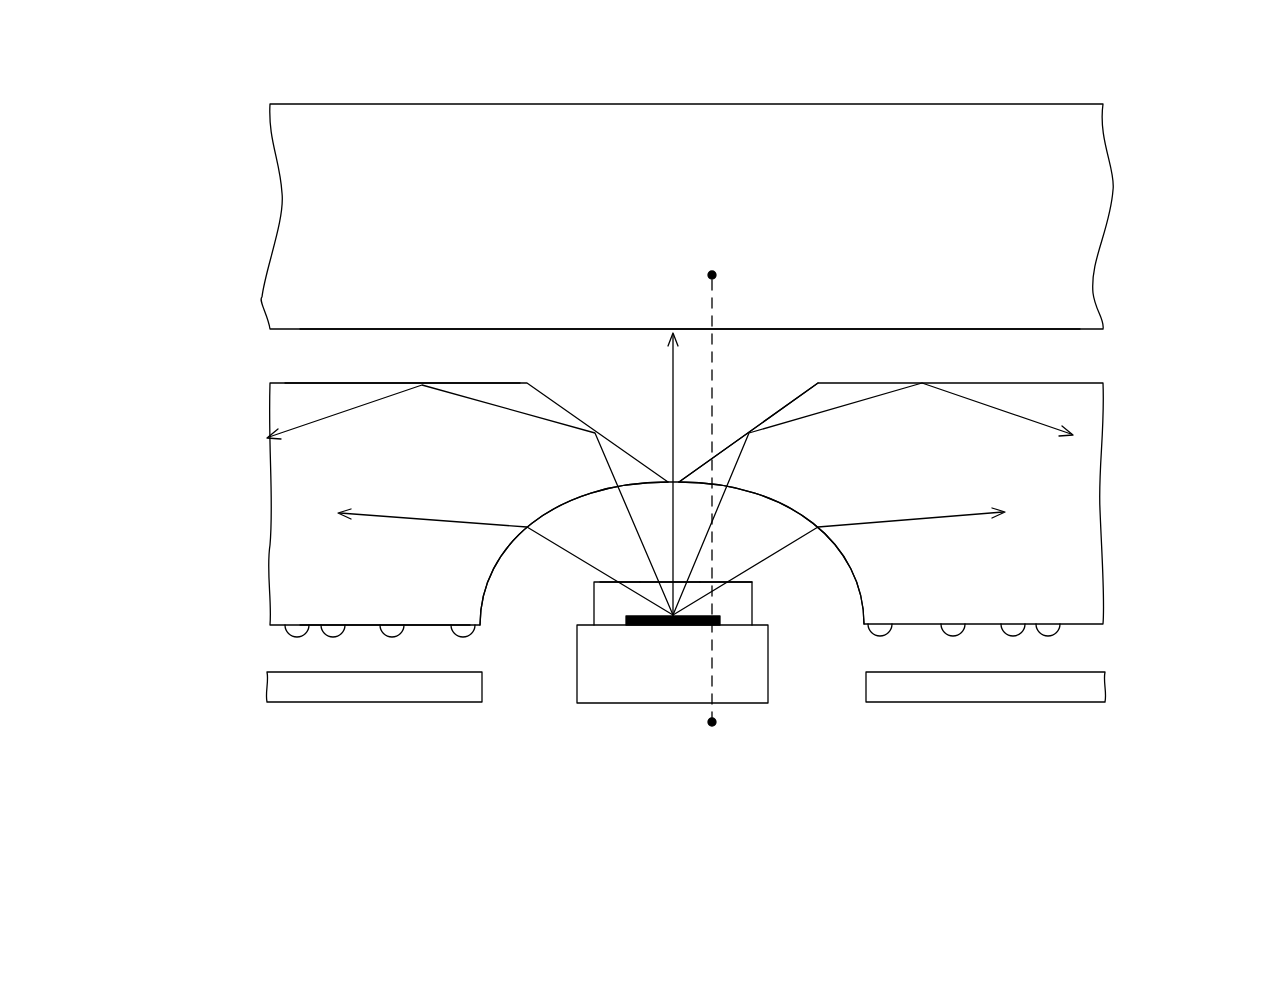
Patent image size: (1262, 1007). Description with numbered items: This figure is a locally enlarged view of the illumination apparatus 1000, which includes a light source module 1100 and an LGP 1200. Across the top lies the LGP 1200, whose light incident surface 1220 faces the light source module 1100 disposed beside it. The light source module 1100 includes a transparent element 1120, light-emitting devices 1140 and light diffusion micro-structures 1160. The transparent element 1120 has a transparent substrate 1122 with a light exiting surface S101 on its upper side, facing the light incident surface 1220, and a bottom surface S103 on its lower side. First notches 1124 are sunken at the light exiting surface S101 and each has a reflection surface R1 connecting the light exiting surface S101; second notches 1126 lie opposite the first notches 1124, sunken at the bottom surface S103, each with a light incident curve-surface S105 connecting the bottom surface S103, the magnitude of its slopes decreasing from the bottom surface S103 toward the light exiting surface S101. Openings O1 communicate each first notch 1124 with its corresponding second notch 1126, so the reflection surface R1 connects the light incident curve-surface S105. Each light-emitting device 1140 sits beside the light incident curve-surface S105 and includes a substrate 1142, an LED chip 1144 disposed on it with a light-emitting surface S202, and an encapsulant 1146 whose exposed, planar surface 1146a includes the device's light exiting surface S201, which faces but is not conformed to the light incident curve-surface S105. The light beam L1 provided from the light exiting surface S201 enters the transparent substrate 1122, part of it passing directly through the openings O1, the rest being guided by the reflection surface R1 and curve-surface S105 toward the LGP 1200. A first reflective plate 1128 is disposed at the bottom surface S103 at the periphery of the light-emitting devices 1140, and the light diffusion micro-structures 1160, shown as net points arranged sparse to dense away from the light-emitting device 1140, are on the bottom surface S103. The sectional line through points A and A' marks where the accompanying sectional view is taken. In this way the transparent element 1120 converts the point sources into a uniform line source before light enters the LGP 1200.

The illumination apparatus 1000 is at (1176, 709).
The light source module 1100 is at (237, 385).
The transparent element 1120 is at (686, 598).
The transparent substrate 1122 is at (925, 593).
The first notches 1124 is at (782, 425).
The second notches 1126 is at (835, 594).
The first reflective plate 1128 is at (1093, 683).
The light-emitting devices 1140 is at (787, 800).
The substrate 1142 is at (688, 673).
The LED chip 1144 is at (645, 627).
The encapsulant 1146 is at (605, 613).
The surface of the encapsulant 1146a is at (628, 577).
The light diffusion micro-structures 1160 is at (1048, 634).
The LGP 1200 is at (1057, 190).
The light incident surface 1220 is at (1030, 333).
The light exiting surface S101 is at (331, 379).
The bottom surface S103 is at (360, 631).
The light incident curve-surface S105 is at (497, 580).
The light exiting surface S201 is at (645, 577).
The light-emitting surface S202 is at (710, 610).
The light beam L1 is at (555, 547).
The reflection surface R1 is at (784, 404).
The openings O1 is at (667, 478).
The reference point A is at (724, 511).
The reference point A' is at (730, 274).